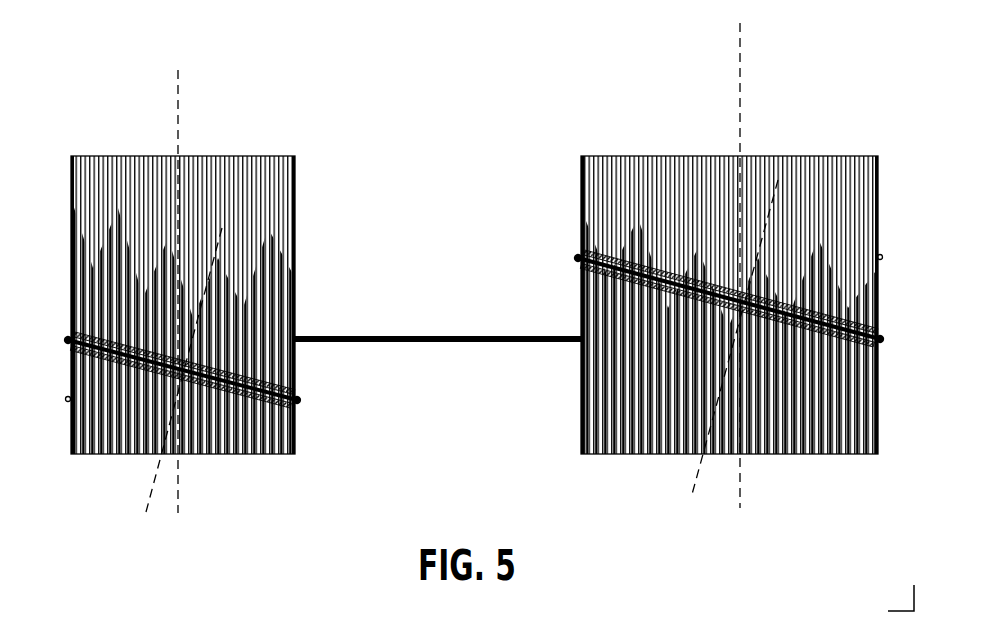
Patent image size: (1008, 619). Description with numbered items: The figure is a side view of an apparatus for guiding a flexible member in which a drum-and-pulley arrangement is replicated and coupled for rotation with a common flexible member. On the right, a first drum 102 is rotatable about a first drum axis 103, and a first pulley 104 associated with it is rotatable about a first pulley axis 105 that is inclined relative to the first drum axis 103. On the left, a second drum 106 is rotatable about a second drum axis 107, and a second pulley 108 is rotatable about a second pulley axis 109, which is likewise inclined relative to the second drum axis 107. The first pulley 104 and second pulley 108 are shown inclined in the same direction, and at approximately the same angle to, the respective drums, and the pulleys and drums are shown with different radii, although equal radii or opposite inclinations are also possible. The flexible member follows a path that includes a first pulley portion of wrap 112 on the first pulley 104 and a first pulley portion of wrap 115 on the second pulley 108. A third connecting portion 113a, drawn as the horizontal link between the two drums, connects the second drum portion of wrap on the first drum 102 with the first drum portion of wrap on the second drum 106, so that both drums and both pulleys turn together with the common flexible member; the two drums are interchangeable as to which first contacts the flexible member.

The first drum 102 is at (642, 152).
The first drum axis 103 is at (737, 38).
The first pulley 104 is at (665, 286).
The first pulley axis 105 is at (763, 212).
The second drum 106 is at (288, 158).
The second drum axis 107 is at (175, 83).
The second pulley 108 is at (219, 362).
The second pulley axis 109 is at (206, 262).
The first pulley portion of wrap 112 is at (806, 336).
The third connecting portion 113a is at (432, 327).
The first pulley portion of wrap 115 is at (230, 398).